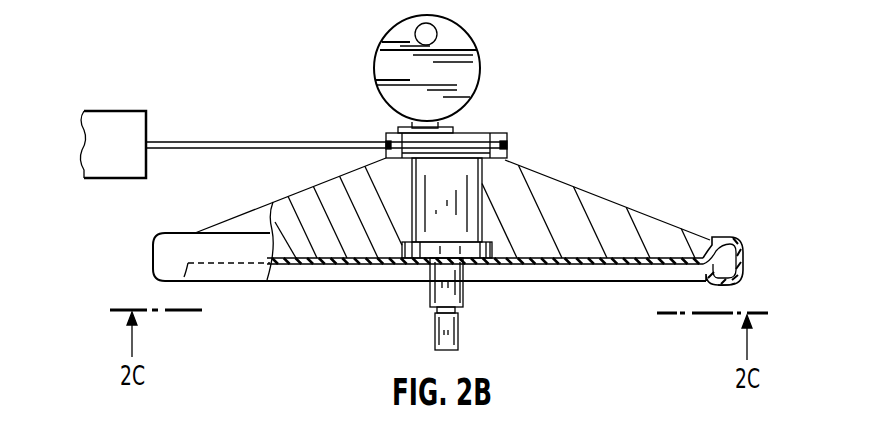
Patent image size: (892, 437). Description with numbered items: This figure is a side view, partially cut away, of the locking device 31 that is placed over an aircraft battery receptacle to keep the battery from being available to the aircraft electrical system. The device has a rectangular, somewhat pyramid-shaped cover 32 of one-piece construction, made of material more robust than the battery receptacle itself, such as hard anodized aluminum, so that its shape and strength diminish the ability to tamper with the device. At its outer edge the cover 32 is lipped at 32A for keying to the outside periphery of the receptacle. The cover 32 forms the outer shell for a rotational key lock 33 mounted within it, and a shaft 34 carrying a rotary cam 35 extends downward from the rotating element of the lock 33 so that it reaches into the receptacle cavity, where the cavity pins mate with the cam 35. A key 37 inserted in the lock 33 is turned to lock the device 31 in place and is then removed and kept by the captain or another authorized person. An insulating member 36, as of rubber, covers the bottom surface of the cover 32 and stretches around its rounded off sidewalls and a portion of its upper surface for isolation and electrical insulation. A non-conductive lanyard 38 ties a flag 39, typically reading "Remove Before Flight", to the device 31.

The locking device 31 is at (143, 230).
The cover 32 is at (527, 188).
The lip 32A is at (743, 236).
The rotational key lock 33 is at (478, 138).
The shaft 34 is at (463, 295).
The rotary cam 35 is at (458, 337).
The insulating member 36 is at (735, 283).
The key 37 is at (473, 50).
The non-conductive lanyard 38 is at (255, 143).
The flag 39 is at (105, 122).